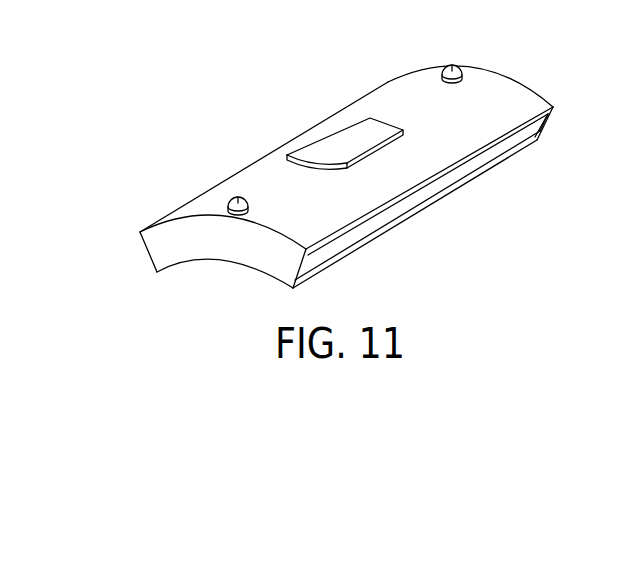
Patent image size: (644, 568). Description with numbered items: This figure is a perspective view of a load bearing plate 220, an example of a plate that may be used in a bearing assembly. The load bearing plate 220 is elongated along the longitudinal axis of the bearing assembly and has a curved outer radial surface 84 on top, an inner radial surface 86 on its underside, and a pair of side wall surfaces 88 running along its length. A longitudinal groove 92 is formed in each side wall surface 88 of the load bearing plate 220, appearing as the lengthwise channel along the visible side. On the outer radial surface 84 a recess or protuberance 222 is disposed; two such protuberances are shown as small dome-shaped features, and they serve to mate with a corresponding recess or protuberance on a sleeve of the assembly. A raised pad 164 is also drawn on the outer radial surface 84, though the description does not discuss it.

The load bearing plate 220 is at (253, 122).
The outer radial surface 84 is at (410, 107).
The inner radial surface 86 is at (227, 263).
The side wall surface 88 is at (362, 250).
The longitudinal groove 92 is at (440, 185).
The pad 164 is at (347, 138).
The recess or protuberance 222 is at (237, 197).